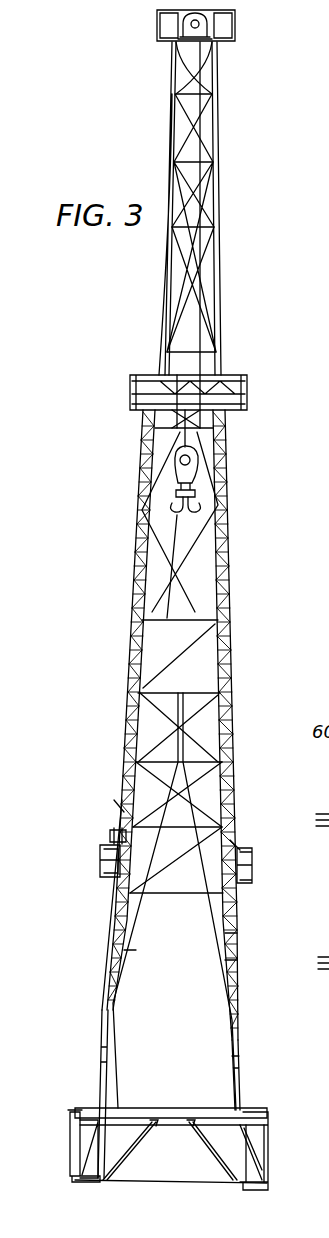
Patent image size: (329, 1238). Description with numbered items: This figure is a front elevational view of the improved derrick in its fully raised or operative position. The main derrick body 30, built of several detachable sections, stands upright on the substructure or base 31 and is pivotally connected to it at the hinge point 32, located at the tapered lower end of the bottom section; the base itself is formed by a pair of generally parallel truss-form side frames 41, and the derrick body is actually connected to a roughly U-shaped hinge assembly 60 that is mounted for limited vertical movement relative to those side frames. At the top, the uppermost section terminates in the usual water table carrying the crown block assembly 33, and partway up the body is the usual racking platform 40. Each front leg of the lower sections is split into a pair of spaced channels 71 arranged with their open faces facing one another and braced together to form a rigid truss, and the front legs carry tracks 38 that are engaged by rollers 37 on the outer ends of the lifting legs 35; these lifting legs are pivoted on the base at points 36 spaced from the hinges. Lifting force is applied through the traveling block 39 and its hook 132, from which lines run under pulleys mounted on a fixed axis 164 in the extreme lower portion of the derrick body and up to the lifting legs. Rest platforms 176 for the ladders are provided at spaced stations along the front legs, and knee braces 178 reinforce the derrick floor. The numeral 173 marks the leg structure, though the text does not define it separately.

The main derrick body 30 is at (236, 604).
The substructure or base 31 is at (274, 1146).
The hinge point 32 is at (102, 1046).
The crown block assembly 33 is at (240, 20).
The lifting legs 35 is at (100, 1088).
The pivot points 36 is at (78, 1170).
The rollers 37 is at (110, 833).
The tracks 38 is at (120, 800).
The traveling block 39 is at (192, 460).
The racking platform 40 is at (130, 380).
The side frames 41 is at (66, 1138).
The hinge assembly 60 is at (121, 1106).
The channels 71 is at (130, 632).
The hook 132 is at (200, 508).
The fixed axis 164 is at (133, 1036).
The lattice leg 173 is at (141, 556).
The rest platforms 176 is at (102, 872).
The knee braces 178 is at (138, 1146).